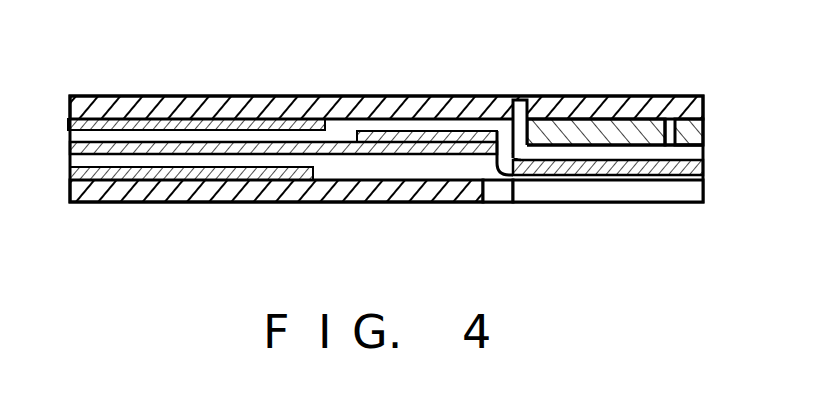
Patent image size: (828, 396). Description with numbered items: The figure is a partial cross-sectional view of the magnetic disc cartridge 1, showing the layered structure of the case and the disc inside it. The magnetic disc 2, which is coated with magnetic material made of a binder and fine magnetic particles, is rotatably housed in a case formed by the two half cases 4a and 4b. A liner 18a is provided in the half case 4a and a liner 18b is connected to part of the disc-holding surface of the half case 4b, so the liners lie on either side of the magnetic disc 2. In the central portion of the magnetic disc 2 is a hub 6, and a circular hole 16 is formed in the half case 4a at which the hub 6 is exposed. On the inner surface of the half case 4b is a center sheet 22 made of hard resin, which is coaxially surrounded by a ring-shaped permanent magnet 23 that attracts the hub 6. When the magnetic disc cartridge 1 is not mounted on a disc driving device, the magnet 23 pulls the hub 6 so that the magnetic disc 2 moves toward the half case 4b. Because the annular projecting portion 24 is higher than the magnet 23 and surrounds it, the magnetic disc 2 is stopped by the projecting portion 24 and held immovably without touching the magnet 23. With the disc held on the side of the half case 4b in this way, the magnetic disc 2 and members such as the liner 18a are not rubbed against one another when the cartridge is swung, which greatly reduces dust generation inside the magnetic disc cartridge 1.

The magnetic disc cartridge 1 is at (688, 53).
The magnetic disc 2 is at (140, 150).
The half case 4a is at (338, 192).
The half case 4b is at (141, 110).
The hub 6 is at (640, 172).
The circular hole 16 is at (492, 192).
The liner 18a is at (225, 175).
The liner 18b is at (317, 122).
The center sheet 22 is at (680, 120).
The permanent magnet 23 is at (540, 128).
The annular projecting portion 24 is at (520, 133).